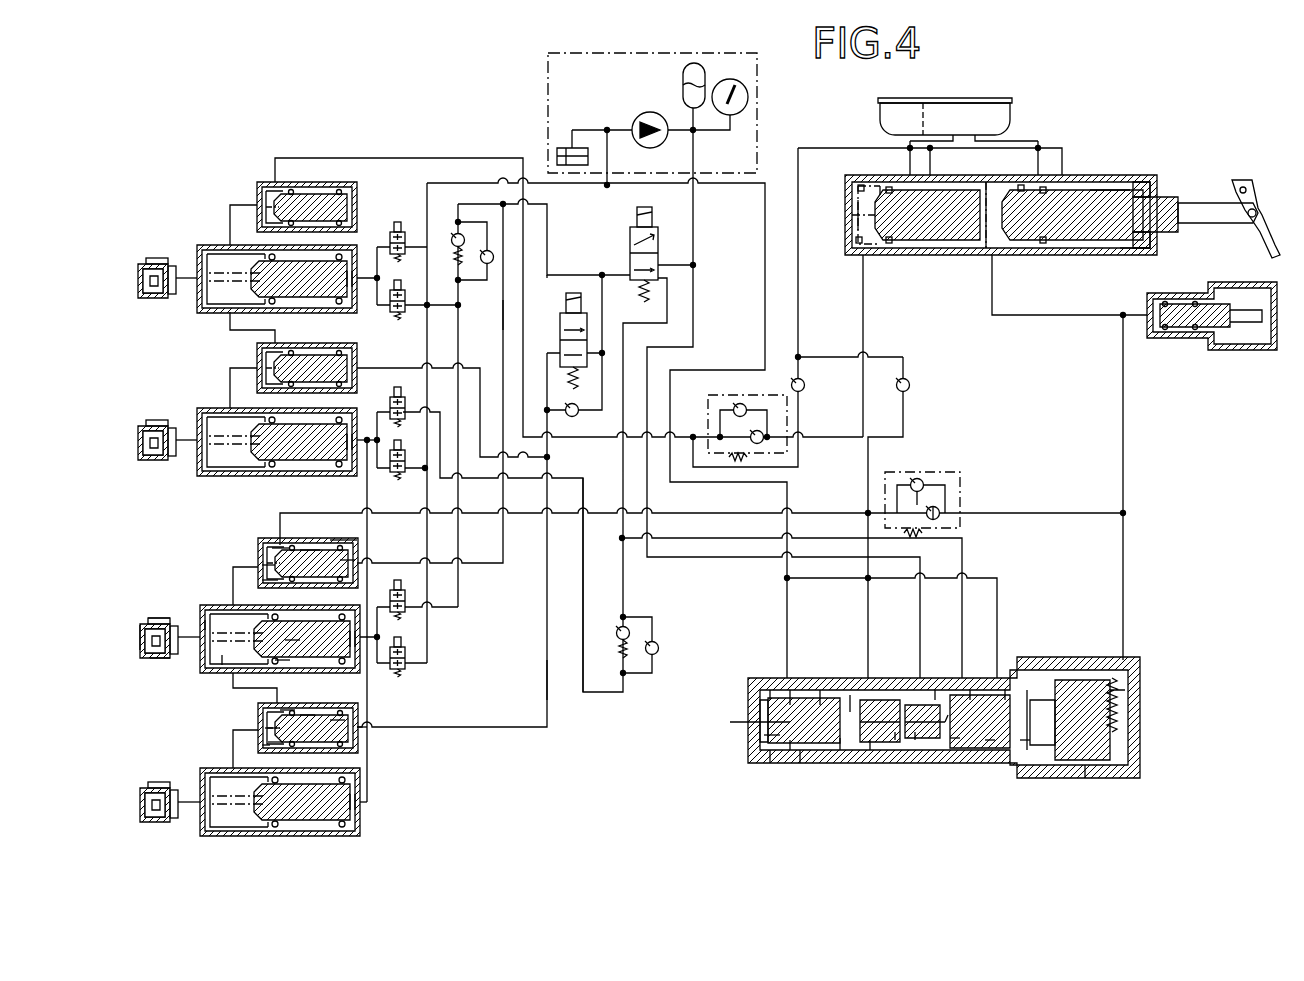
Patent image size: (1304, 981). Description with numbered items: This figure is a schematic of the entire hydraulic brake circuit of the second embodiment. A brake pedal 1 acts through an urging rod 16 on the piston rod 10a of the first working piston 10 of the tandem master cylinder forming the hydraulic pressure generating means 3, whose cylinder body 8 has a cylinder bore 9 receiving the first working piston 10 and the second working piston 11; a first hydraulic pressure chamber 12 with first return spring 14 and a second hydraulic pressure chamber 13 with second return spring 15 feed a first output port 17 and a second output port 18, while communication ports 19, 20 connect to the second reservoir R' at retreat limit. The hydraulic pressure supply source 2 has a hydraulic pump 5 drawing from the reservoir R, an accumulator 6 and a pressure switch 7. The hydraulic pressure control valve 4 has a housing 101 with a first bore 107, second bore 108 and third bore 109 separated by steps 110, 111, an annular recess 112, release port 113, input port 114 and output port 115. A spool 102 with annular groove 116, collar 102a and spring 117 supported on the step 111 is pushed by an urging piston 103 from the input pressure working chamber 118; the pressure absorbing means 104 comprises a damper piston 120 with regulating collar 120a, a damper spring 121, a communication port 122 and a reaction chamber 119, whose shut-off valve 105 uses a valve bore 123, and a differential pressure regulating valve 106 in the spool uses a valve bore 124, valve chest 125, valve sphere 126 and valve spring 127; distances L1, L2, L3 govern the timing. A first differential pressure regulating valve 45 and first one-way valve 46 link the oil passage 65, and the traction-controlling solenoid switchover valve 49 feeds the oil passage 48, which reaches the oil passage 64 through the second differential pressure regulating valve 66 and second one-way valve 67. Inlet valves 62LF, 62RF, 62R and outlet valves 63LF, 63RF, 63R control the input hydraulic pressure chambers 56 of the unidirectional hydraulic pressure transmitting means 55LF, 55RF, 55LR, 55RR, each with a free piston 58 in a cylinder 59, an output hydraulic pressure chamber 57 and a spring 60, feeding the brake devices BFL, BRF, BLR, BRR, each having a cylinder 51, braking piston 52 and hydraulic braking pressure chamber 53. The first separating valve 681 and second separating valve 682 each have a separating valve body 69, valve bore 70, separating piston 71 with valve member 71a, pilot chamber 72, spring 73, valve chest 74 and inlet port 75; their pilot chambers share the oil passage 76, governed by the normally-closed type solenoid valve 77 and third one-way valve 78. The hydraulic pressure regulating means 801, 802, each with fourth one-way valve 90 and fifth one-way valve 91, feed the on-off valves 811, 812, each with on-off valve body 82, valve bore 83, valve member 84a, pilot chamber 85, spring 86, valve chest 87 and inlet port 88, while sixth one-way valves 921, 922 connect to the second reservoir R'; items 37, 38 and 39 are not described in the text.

The brake pedal 1 is at (1272, 255).
The hydraulic pressure supply source 2 is at (758, 114).
The hydraulic pressure generating means 3 is at (987, 201).
The hydraulic pressure control valve 4 is at (942, 712).
The hydraulic pump 5 is at (638, 115).
The accumulator 6 is at (683, 80).
The pressure switch 7 is at (738, 112).
The cylinder body 8 is at (1112, 252).
The cylinder bore 9 is at (890, 244).
The first working piston 10 is at (1110, 185).
The piston rod 10a is at (1160, 197).
The second working piston 11 is at (945, 240).
The first hydraulic pressure chamber 12 is at (1010, 245).
The second hydraulic pressure chamber 13 is at (862, 184).
The first return spring 14 is at (1040, 244).
The second return spring 15 is at (850, 193).
The urging rod 16 is at (1192, 210).
The first output port 17 is at (985, 248).
The second output port 18 is at (858, 248).
The communication port 19 is at (1022, 184).
The communication port 20 is at (886, 186).
The stroke simulator cylinder 37 is at (1222, 350).
The fluid line 38 is at (1123, 418).
The fluid line 39 is at (863, 296).
The first differential pressure regulating valve 45 is at (615, 645).
The first one-way valve 46 is at (656, 645).
The oil passage 48 is at (548, 260).
The traction-controlling solenoid switchover valve 49 is at (659, 250).
The cylinder 51 is at (155, 658).
The braking piston 52 is at (140, 630).
The hydraulic braking pressure chamber 53 is at (160, 618).
The unidirectional hydraulic pressure transmitting means 55RF is at (210, 245).
The unidirectional hydraulic pressure transmitting means 55LR is at (255, 478).
The unidirectional hydraulic pressure transmitting means 55LF is at (200, 618).
The unidirectional hydraulic pressure transmitting means 55RR is at (272, 840).
The input hydraulic pressure chamber 56 is at (368, 605).
The output hydraulic pressure chamber 57 is at (222, 665).
The free piston 58 is at (310, 650).
The cylinder 59 is at (280, 672).
The spring 60 is at (205, 660).
The inlet valve 62RF is at (392, 232).
The outlet valve 63RF is at (400, 322).
The inlet valve 62R is at (392, 400).
The outlet valve 63R is at (400, 482).
The inlet valve 62LF is at (400, 580).
The outlet valve 63LF is at (405, 672).
The oil passage 64 is at (458, 336).
The oil passage 65 is at (583, 583).
The second differential pressure regulating valve 66 is at (452, 236).
The second one-way valve 67 is at (487, 270).
The first separating valve 681 is at (320, 705).
The second separating valve 682 is at (318, 345).
The separating valve body 69 is at (367, 753).
The valve bore 70 is at (268, 742).
The separating piston 71 is at (335, 722).
The valve member 71a is at (265, 726).
The pilot chamber 72 is at (365, 720).
The spring 73 is at (300, 712).
The valve chest 74 is at (262, 745).
The inlet port 75 is at (280, 708).
The oil passage 76 is at (547, 648).
The normally-closed type solenoid valve 77 is at (562, 328).
The third one-way valve 78 is at (578, 415).
The hydraulic pressure regulating means 801 is at (916, 478).
The hydraulic pressure regulating means 802 is at (758, 395).
The on-off valve 811 is at (262, 556).
The on-off valve 812 is at (357, 188).
The on-off valve body 82 is at (332, 538).
The valve bore 83 is at (262, 565).
The valve member 84a is at (275, 545).
The pilot chamber 85 is at (357, 560).
The spring 86 is at (265, 580).
The valve chest 87 is at (305, 538).
The inlet port 88 is at (278, 536).
The fourth one-way valve 90 is at (935, 506).
The fifth one-way valve 91 is at (920, 480).
The sixth one-way valve 921 is at (910, 388).
The sixth one-way valve 922 is at (805, 388).
The housing 101 is at (808, 763).
The spool 102 is at (980, 721).
The collar 102a is at (1058, 700).
The urging piston 103 is at (1100, 740).
The pressure absorbing means 104 is at (793, 752).
The shut-off valve 105 is at (806, 720).
The differential pressure regulating valve 106 is at (905, 690).
The first bore 107 is at (770, 752).
The second bore 108 is at (842, 752).
The third bore 109 is at (1090, 768).
The step 110 is at (800, 690).
The step 111 is at (1025, 765).
The annular recess 112 is at (995, 750).
The release port 113 is at (1005, 690).
The input port 114 is at (930, 690).
The output port 115 is at (975, 690).
The annular groove 116 is at (960, 750).
The spring 117 is at (1030, 680).
The input pressure working chamber 118 is at (1127, 680).
The reaction chamber 119 is at (855, 690).
The damper piston 120 is at (762, 700).
The regulating collar 120a is at (830, 690).
The damper spring 121 is at (764, 742).
The communication port 122 is at (787, 683).
The valve bore 123 is at (875, 690).
The valve bore 124 is at (947, 725).
The valve chest 125 is at (895, 745).
The valve sphere 126 is at (917, 745).
The valve spring 127 is at (870, 752).
The distance L1 is at (926, 687).
The distance L2 is at (880, 687).
The distance L3 is at (760, 737).
The right front wheel brake device BRF is at (157, 257).
The left rear wheel brake device BLR is at (160, 418).
The left front wheel brake device BFL is at (160, 660).
The right rear wheel brake device BRR is at (160, 782).
The reservoir R is at (569, 138).
The second reservoir R' is at (931, 116).